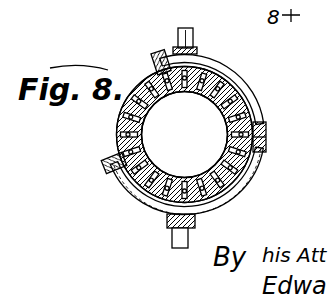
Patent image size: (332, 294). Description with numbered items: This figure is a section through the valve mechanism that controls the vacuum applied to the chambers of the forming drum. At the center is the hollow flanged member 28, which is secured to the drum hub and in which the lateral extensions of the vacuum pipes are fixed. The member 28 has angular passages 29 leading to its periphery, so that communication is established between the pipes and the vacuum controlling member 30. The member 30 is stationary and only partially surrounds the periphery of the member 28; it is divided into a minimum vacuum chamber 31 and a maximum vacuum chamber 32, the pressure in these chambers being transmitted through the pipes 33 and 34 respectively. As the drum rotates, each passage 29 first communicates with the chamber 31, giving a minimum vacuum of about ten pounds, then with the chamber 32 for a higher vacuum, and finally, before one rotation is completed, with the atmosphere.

The hollow flanged member 28 is at (196, 92).
The angular passage 29 is at (117, 135).
The vacuum controlling member 30 is at (253, 109).
The minimum vacuum chamber 31 is at (241, 188).
The maximum vacuum chamber 32 is at (232, 74).
The pipe 33 is at (175, 232).
The pipe 34 is at (186, 40).